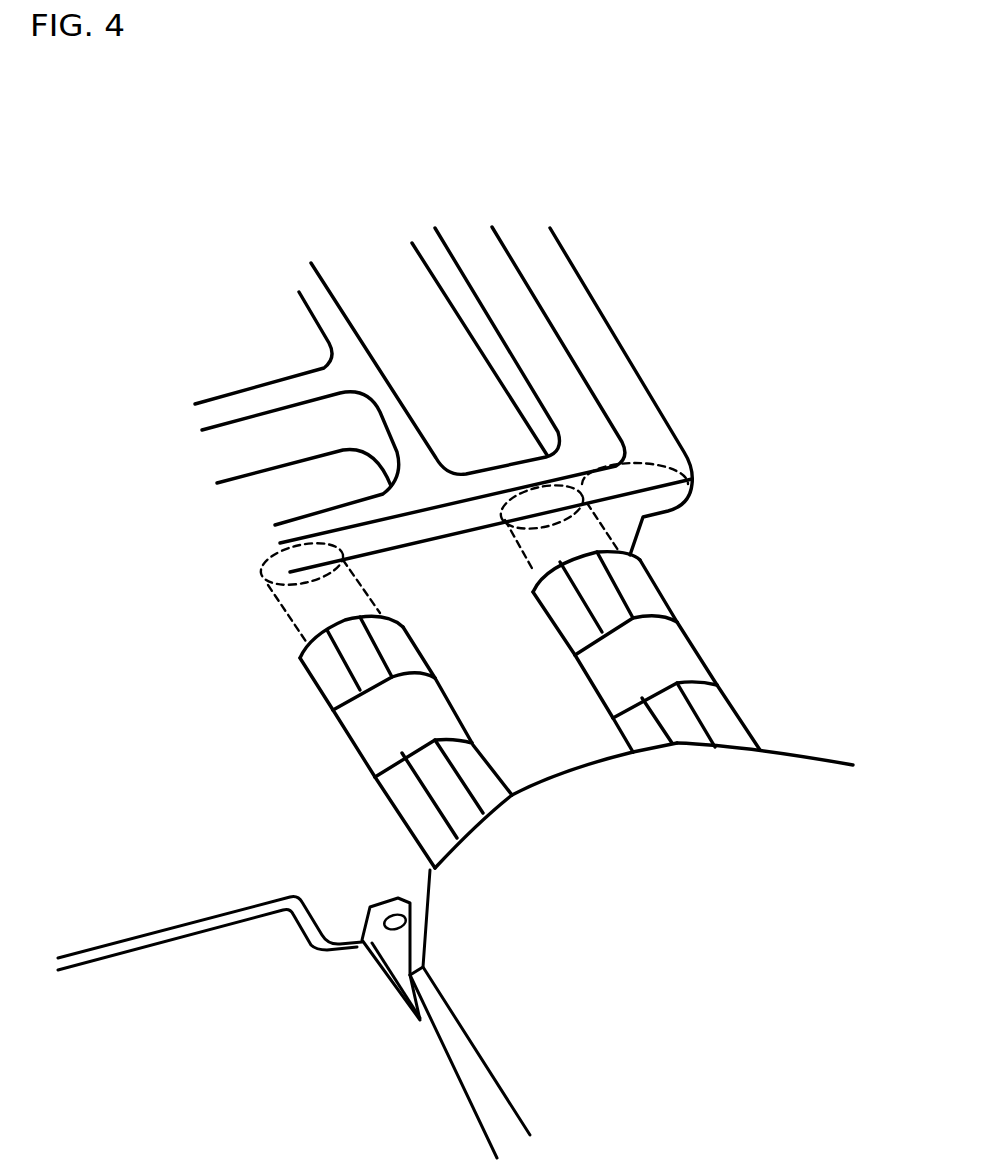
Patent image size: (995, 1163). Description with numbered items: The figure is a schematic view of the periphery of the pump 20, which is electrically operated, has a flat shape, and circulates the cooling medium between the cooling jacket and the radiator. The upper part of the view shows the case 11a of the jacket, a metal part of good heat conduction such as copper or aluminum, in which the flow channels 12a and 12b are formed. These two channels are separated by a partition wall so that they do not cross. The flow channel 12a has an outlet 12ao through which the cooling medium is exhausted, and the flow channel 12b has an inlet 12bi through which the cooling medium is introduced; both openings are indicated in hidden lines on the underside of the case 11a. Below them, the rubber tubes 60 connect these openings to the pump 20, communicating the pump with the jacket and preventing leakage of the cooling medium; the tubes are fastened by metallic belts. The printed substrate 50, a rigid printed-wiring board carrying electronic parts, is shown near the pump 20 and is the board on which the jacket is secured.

The case 11a is at (627, 353).
The flow channel 12a is at (435, 335).
The flow channel 12b is at (333, 478).
The outlet 12ao is at (687, 483).
The inlet 12bi is at (263, 582).
The rubber tubes 60 is at (617, 672).
The printed substrate 50 is at (175, 938).
The pump 20 is at (440, 1070).